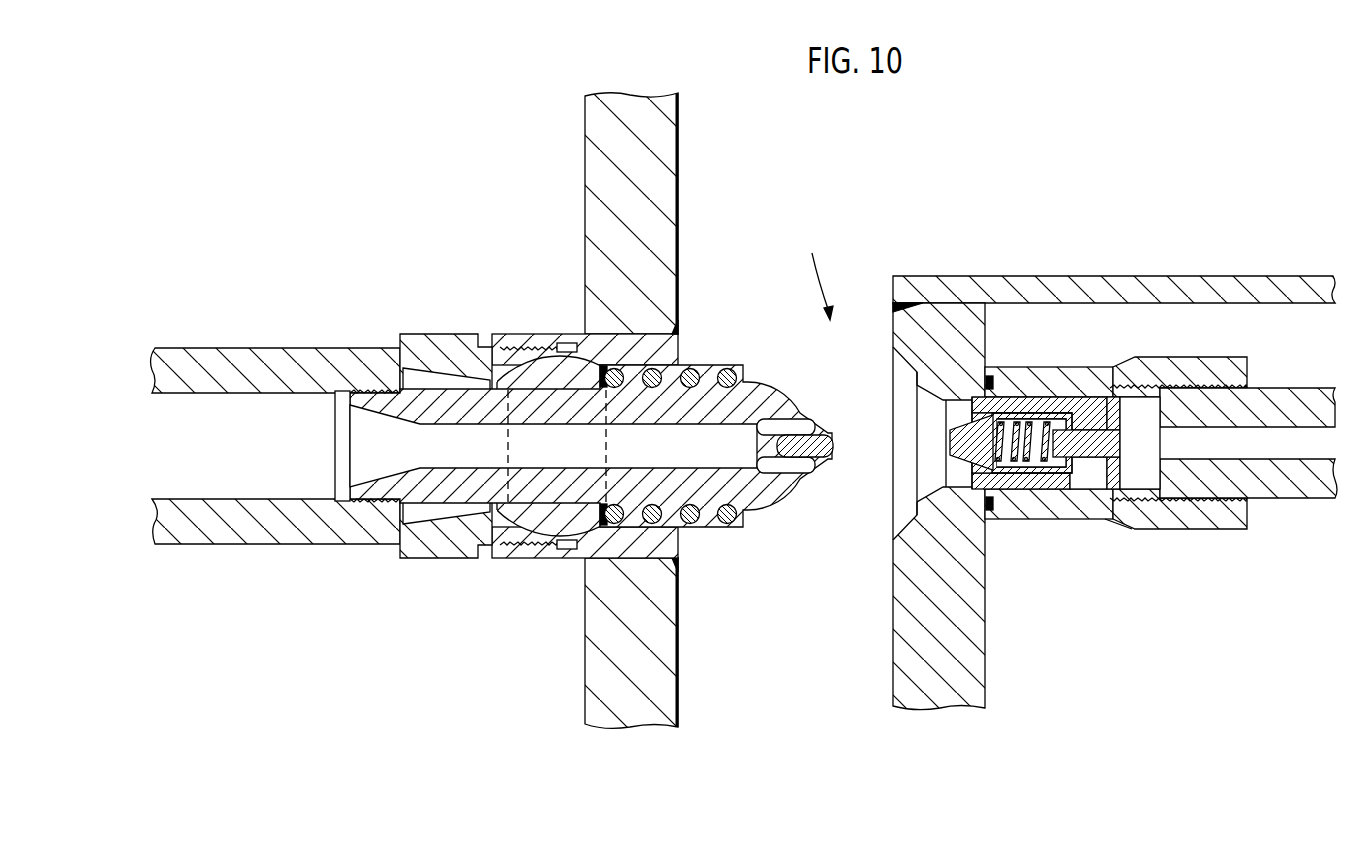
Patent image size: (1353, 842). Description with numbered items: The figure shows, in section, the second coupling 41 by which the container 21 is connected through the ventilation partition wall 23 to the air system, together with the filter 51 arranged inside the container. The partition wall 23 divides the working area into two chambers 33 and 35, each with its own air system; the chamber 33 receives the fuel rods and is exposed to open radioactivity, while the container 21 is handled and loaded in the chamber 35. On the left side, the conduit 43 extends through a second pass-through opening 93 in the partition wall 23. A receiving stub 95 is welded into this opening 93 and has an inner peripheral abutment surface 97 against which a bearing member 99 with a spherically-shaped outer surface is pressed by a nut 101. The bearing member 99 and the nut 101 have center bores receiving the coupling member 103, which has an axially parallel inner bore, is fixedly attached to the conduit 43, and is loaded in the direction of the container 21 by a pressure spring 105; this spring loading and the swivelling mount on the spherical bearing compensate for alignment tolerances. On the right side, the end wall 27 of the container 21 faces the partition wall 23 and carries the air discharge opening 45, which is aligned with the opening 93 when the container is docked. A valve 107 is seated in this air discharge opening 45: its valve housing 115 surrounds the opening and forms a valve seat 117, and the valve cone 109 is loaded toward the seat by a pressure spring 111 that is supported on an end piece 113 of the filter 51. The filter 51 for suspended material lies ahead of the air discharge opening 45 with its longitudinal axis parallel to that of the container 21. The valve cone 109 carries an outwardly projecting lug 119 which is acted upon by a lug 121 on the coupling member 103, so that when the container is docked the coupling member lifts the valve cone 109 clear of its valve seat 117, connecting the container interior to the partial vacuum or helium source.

The container 21 is at (1150, 290).
The ventilation partition wall 23 is at (608, 668).
The end wall 27 is at (945, 318).
The chamber 33 is at (454, 165).
The chamber 35 is at (796, 165).
The second coupling 41 is at (817, 271).
The conduit 43 is at (253, 528).
The air discharge opening 45 is at (962, 482).
The filter 51 is at (1282, 388).
The second pass-through opening 93 is at (678, 580).
The receiving stub 95 is at (610, 547).
The inner peripheral abutment surface 97 is at (590, 331).
The bearing member 99 is at (535, 366).
The nut 101 is at (430, 335).
The coupling member 103 is at (455, 488).
The pressure spring 105 is at (690, 522).
The valve 107 is at (1062, 525).
The valve cone 109 is at (1000, 425).
The pressure spring 111 is at (1036, 440).
The end piece 113 is at (1087, 440).
The valve housing 115 is at (1138, 527).
The valve seat 117 is at (1010, 503).
The lug 119 is at (950, 440).
The lug 121 is at (829, 437).